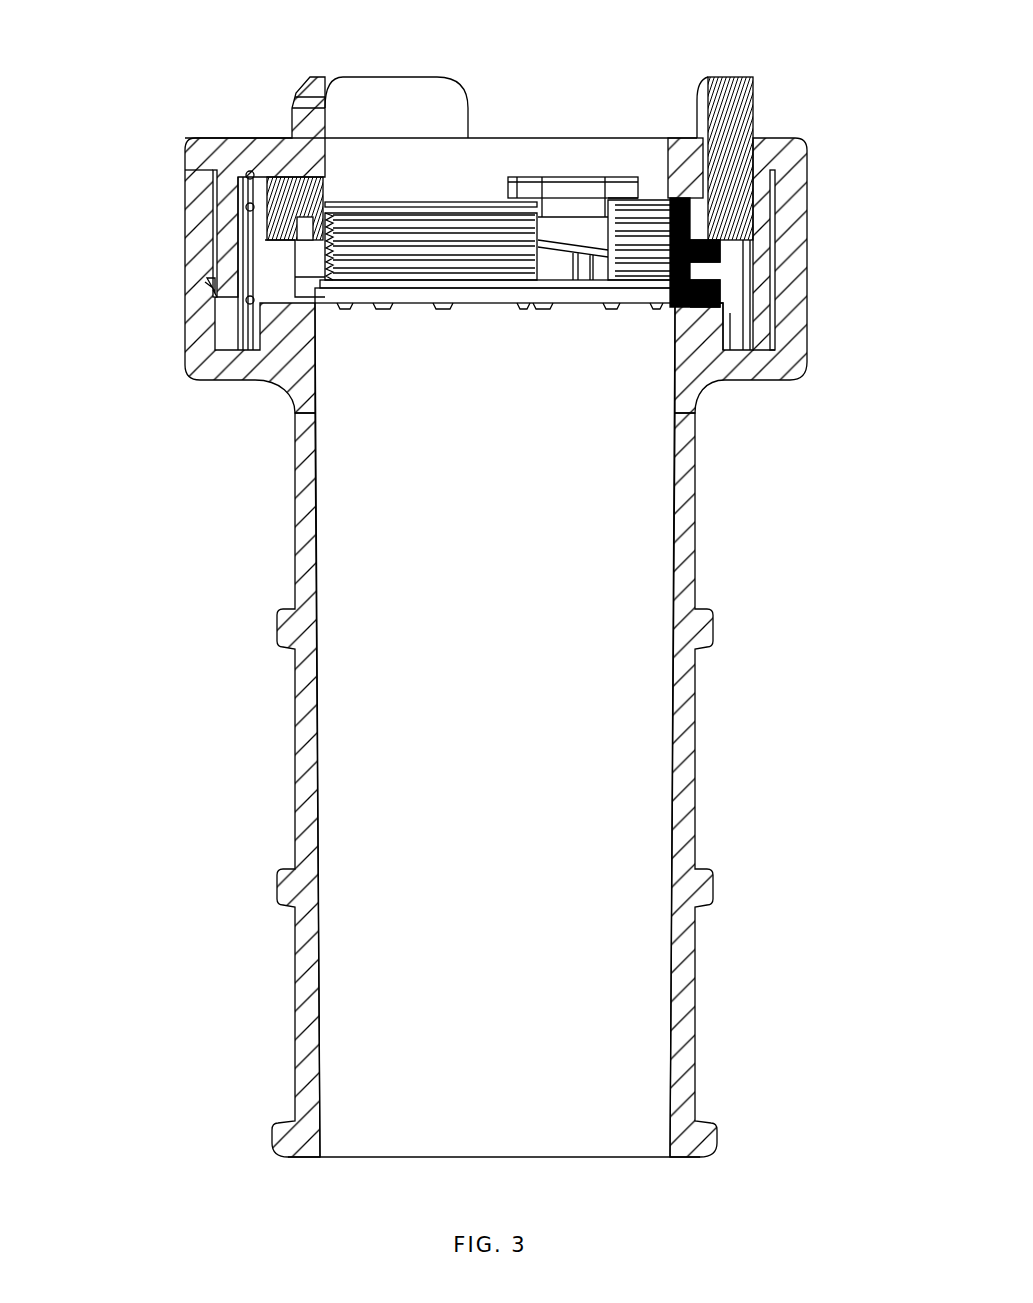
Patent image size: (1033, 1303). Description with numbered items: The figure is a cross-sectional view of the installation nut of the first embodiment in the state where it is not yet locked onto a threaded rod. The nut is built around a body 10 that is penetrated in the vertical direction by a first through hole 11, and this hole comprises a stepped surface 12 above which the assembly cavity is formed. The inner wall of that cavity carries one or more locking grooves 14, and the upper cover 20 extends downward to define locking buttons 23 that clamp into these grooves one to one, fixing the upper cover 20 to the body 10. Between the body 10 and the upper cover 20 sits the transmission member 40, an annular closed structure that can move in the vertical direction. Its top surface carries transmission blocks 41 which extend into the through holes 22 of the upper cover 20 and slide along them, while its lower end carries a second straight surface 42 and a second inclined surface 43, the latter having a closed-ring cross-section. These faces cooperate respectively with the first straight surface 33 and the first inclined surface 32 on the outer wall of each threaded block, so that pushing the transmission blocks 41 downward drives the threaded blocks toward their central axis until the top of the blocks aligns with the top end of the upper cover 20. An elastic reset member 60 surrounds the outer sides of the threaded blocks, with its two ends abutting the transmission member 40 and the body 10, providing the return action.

The body 10 is at (685, 736).
The first through hole 11 is at (645, 487).
The stepped surface 12 is at (720, 308).
The locking groove 14 is at (213, 294).
The upper cover 20 is at (752, 182).
The through hole 22 is at (762, 135).
The locking button 23 is at (212, 282).
The first inclined surface 32 is at (722, 243).
The first straight surface 33 is at (718, 294).
The transmission member 40 is at (282, 192).
The transmission block 41 is at (718, 96).
The second straight surface 42 is at (712, 230).
The second inclined surface 43 is at (722, 248).
The elastic reset member 60 is at (257, 297).